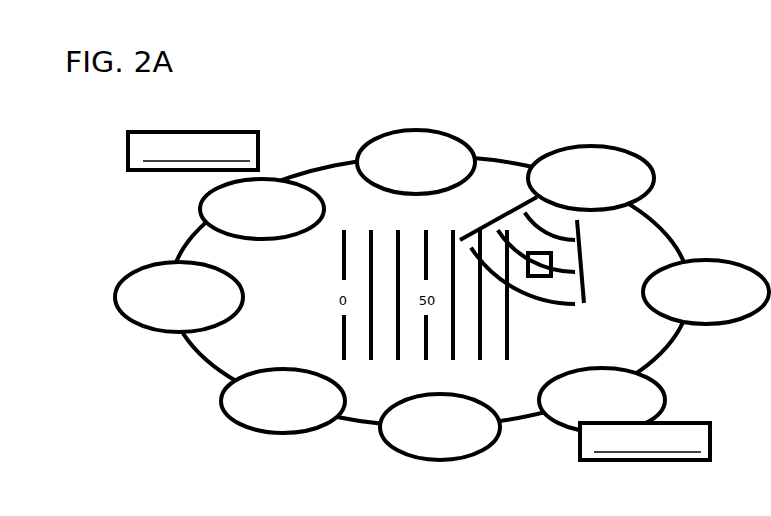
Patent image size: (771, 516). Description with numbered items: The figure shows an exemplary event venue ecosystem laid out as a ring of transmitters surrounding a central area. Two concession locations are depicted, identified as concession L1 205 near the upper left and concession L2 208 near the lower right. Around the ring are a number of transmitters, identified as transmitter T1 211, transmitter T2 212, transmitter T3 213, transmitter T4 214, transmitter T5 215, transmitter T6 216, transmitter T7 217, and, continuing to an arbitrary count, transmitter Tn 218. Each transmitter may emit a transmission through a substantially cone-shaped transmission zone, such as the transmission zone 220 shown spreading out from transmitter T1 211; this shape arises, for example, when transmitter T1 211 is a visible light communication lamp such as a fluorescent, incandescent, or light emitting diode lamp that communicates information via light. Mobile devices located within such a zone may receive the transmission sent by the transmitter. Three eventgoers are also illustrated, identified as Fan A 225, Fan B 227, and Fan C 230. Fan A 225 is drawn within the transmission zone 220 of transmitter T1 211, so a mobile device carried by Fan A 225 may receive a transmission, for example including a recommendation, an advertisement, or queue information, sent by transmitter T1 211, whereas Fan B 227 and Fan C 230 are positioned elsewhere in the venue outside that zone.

The concession L1 205 is at (205, 130).
The concession L2 208 is at (695, 462).
The transmitter T1 211 is at (578, 167).
The transmitter T2 212 is at (403, 151).
The transmitter T3 213 is at (249, 198).
The transmitter T4 214 is at (166, 286).
The transmitter T5 215 is at (270, 390).
The transmitter T6 216 is at (427, 416).
The transmitter T7 217 is at (589, 389).
The transmitter Tn 218 is at (693, 281).
The transmission zone 220 is at (540, 222).
The Fan A 225 is at (550, 255).
The Fan B 227 is at (285, 348).
The Fan C 230 is at (575, 353).